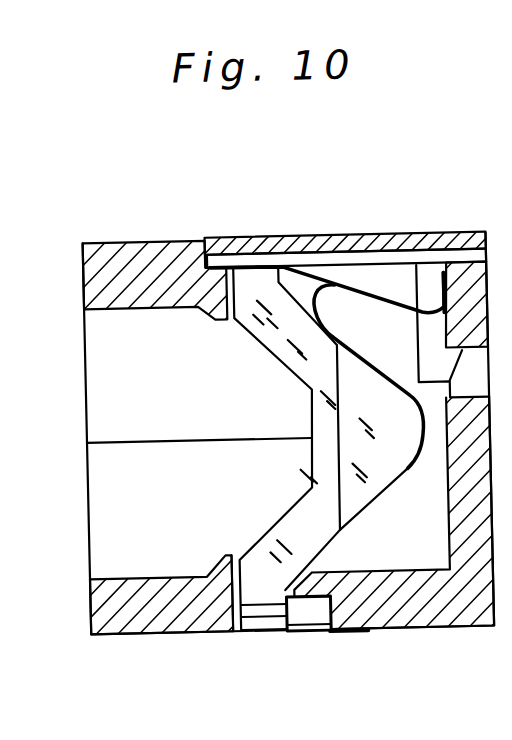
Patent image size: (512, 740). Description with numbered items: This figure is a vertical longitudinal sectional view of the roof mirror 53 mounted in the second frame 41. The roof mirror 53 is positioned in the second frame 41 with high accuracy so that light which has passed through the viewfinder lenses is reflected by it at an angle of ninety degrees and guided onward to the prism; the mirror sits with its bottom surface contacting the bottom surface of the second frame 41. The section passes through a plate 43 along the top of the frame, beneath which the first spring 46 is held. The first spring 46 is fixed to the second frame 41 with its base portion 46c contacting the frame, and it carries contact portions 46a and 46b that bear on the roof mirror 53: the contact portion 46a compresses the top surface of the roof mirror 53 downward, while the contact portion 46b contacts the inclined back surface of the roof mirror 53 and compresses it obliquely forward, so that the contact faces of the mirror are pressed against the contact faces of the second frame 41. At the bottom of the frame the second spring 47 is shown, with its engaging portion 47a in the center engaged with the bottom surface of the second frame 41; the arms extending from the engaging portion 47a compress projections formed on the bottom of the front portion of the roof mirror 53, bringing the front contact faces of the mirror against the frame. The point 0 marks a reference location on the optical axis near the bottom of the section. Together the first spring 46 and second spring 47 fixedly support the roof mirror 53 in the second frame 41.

The second frame 41 is at (106, 628).
The cover plate 43 is at (241, 249).
The first spring 46 is at (325, 283).
The contact portions 46a is at (280, 266).
The contact portions 46b is at (349, 323).
The base portions 46c is at (445, 291).
The second spring 47 is at (304, 604).
The engaging portion 47a is at (348, 637).
The roof mirror 53 is at (386, 475).
The optical axis point 0 is at (238, 634).